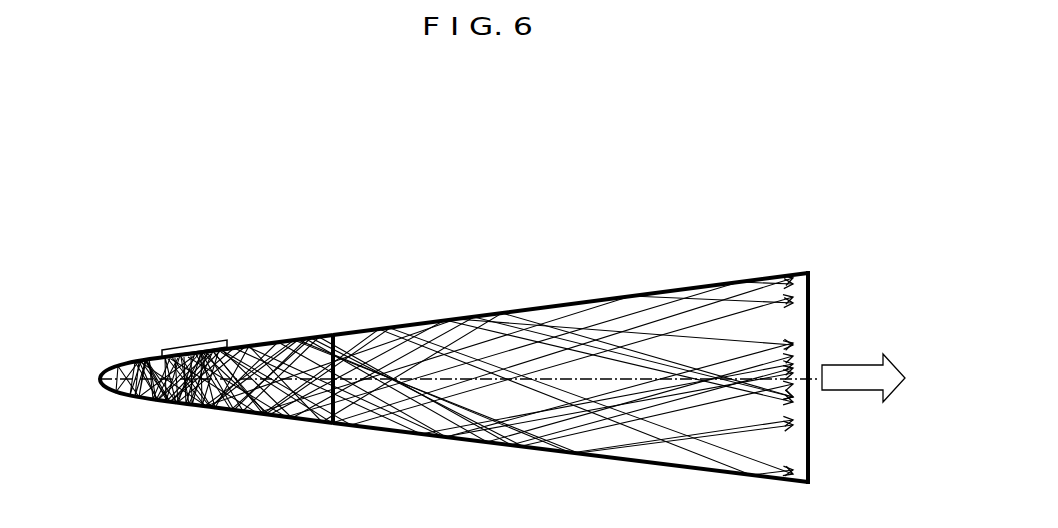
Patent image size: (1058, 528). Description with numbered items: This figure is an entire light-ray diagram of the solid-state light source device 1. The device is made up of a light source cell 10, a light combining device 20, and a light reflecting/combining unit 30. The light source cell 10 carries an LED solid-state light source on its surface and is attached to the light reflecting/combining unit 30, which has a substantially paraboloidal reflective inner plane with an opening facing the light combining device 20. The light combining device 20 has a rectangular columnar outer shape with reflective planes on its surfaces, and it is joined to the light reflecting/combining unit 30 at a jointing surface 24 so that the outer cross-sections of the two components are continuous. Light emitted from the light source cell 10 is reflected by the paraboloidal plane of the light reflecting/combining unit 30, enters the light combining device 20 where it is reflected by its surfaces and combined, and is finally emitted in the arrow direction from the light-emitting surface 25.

The solid-state light source device 1 is at (481, 306).
The light source cell 10 is at (178, 343).
The light combining device 20 is at (565, 305).
The jointing surface 24 is at (337, 334).
The light-emitting surface 25 is at (812, 308).
The light reflecting/combining unit 30 is at (257, 340).